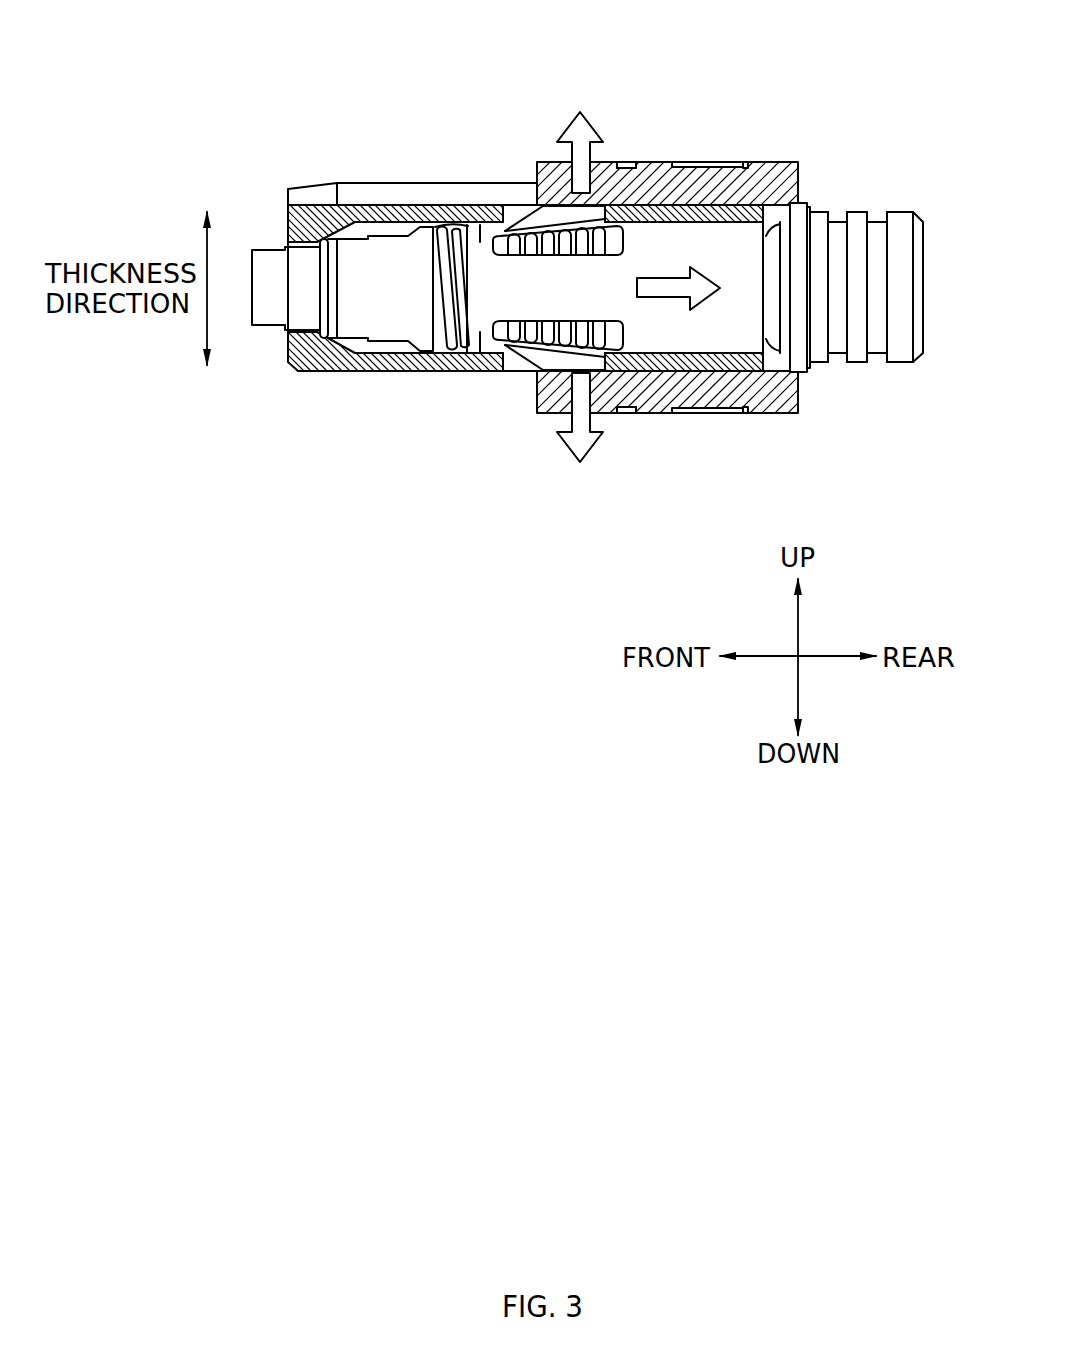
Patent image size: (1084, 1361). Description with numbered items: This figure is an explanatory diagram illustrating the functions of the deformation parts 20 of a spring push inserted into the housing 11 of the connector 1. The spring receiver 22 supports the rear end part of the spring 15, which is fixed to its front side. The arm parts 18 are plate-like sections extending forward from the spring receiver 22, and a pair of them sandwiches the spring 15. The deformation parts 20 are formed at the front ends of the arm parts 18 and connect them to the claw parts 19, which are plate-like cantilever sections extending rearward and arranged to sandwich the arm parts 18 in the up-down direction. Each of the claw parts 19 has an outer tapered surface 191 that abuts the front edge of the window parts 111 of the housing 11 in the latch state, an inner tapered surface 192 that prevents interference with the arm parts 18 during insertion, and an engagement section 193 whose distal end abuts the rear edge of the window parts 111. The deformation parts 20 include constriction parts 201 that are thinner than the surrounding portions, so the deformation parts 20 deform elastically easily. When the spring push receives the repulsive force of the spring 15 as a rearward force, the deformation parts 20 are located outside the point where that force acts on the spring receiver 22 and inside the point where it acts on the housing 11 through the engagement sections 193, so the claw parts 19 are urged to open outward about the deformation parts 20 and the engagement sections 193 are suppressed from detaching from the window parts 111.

The connector 1 is at (853, 74).
The housing 11 is at (352, 188).
The window parts 111 is at (507, 196).
The spring 15 is at (433, 363).
The arm parts 18 is at (594, 300).
The claw parts 19 is at (658, 50).
The outer tapered surfaces 191 is at (520, 212).
The inner tapered surfaces 192 is at (545, 206).
The engagement sections 193 is at (617, 163).
The deformation parts 20 is at (472, 224).
The constriction parts 201 is at (515, 230).
The spring receiver 22 is at (742, 237).